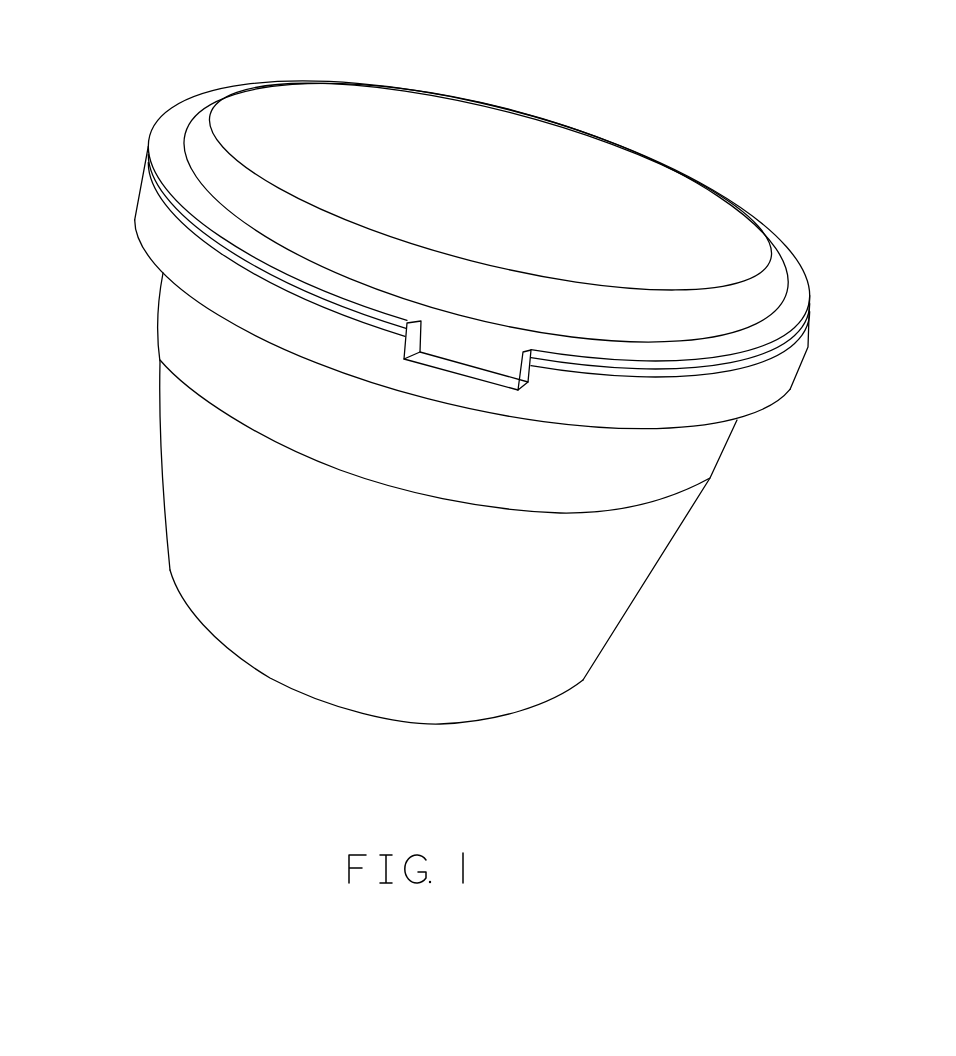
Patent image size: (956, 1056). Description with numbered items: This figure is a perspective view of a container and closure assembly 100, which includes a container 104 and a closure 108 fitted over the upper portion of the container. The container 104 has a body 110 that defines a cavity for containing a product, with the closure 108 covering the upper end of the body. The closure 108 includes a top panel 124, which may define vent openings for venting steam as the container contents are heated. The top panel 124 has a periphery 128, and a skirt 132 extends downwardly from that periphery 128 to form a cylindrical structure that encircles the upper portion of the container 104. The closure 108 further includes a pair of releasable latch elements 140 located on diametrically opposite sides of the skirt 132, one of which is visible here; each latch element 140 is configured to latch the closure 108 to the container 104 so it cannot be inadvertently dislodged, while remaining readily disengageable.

The container and closure assembly 100 is at (564, 88).
The container 104 is at (580, 603).
The closure 108 is at (306, 106).
The body 110 is at (667, 548).
The top panel 124 is at (680, 242).
The periphery 128 is at (149, 147).
The skirt 132 is at (162, 237).
The latch element 140 is at (462, 350).